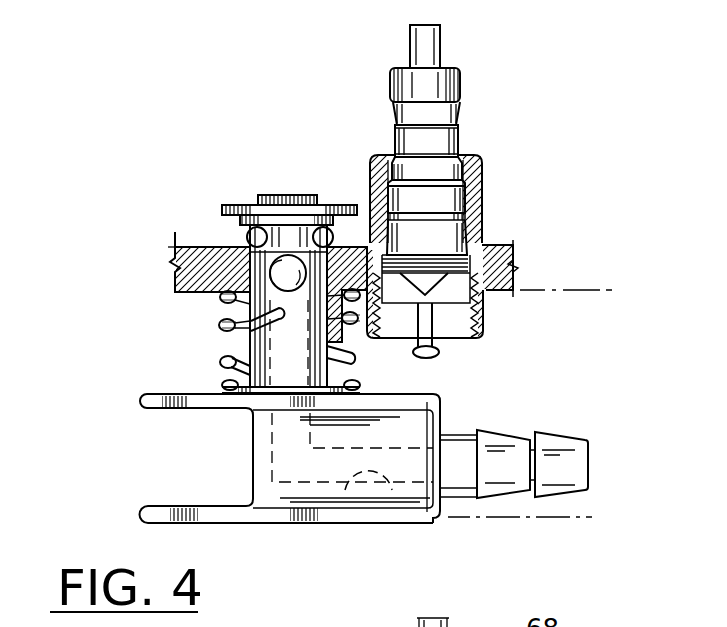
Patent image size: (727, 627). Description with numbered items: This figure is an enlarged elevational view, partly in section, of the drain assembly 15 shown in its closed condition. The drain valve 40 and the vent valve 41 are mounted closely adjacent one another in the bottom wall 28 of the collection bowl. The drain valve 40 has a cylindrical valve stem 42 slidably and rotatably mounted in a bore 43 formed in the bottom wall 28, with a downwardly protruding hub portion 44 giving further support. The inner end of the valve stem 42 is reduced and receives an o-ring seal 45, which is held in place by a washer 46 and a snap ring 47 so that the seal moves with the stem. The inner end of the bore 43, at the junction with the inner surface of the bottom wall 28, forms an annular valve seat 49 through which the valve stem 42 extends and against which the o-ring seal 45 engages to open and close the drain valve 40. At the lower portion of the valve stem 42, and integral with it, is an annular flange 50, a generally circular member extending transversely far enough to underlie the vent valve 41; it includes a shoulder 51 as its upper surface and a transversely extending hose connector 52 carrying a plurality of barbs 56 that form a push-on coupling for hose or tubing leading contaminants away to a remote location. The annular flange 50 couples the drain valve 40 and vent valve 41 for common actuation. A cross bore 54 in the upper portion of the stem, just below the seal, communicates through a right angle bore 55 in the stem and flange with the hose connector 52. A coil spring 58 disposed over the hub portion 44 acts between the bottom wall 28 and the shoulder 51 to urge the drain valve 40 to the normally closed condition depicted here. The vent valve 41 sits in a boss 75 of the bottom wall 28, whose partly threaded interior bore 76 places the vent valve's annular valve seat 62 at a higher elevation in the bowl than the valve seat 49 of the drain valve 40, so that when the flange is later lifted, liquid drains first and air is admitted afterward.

The drain assembly 15 is at (126, 459).
The bottom wall 28 is at (243, 247).
The drain valve 40 is at (256, 524).
The vent valve 41 is at (460, 135).
The valve stem 42 is at (282, 340).
The bore 43 is at (250, 325).
The hub portion 44 is at (245, 307).
The o-ring seal 45 is at (247, 231).
The washer 46 is at (244, 206).
The snap ring 47 is at (330, 225).
The annular valve seat 49 is at (245, 247).
The annular flange 50 is at (440, 397).
The shoulder 51 is at (163, 395).
The hose connector 52 is at (508, 494).
The cross bore 54 is at (298, 278).
The right angle bore 55 is at (350, 495).
The barbs 56 is at (548, 432).
The spring 58 is at (223, 362).
The annular valve seat 62 is at (460, 102).
The boss 75 is at (483, 222).
The partly threaded interior bore 76 is at (457, 307).